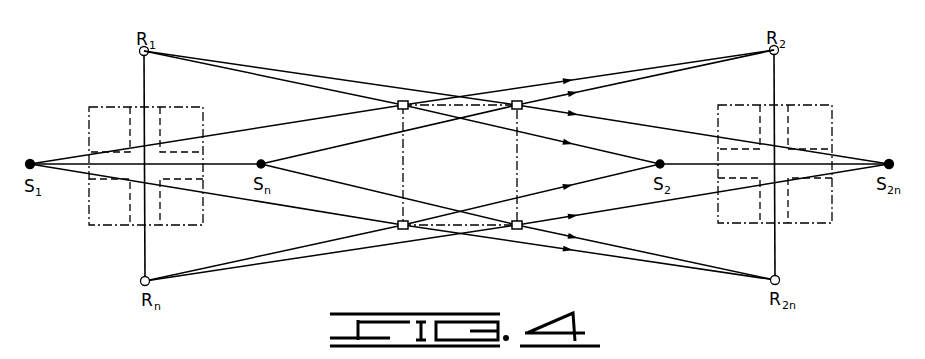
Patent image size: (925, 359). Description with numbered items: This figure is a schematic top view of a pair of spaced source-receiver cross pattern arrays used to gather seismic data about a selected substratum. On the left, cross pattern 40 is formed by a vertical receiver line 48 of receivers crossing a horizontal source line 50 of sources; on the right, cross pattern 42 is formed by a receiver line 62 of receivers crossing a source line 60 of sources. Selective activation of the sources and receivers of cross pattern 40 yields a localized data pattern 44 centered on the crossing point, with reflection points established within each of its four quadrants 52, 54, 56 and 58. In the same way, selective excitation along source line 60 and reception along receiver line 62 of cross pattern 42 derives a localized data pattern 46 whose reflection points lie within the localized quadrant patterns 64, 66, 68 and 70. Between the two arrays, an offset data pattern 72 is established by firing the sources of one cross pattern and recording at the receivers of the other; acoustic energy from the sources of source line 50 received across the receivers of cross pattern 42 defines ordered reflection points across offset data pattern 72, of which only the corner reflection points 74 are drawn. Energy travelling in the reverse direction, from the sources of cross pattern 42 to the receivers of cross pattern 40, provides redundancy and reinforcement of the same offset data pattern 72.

The cross pattern 40 is at (198, 46).
The cross pattern 42 is at (784, 62).
The localized data pattern 44 is at (205, 108).
The localized data pattern 46 is at (834, 110).
The receiver line 48 is at (142, 63).
The source line 50 is at (222, 164).
The quadrant 52 is at (192, 135).
The quadrant 54 is at (192, 213).
The quadrant 56 is at (119, 213).
The quadrant 58 is at (119, 135).
The source line 60 is at (843, 164).
The receiver line 62 is at (777, 82).
The localized quadrant pattern 64 is at (821, 135).
The localized quadrant pattern 66 is at (821, 211).
The localized quadrant pattern 68 is at (749, 213).
The localized quadrant pattern 70 is at (750, 131).
The offset data pattern 72 is at (471, 172).
The corner reflection points 74 is at (404, 100).